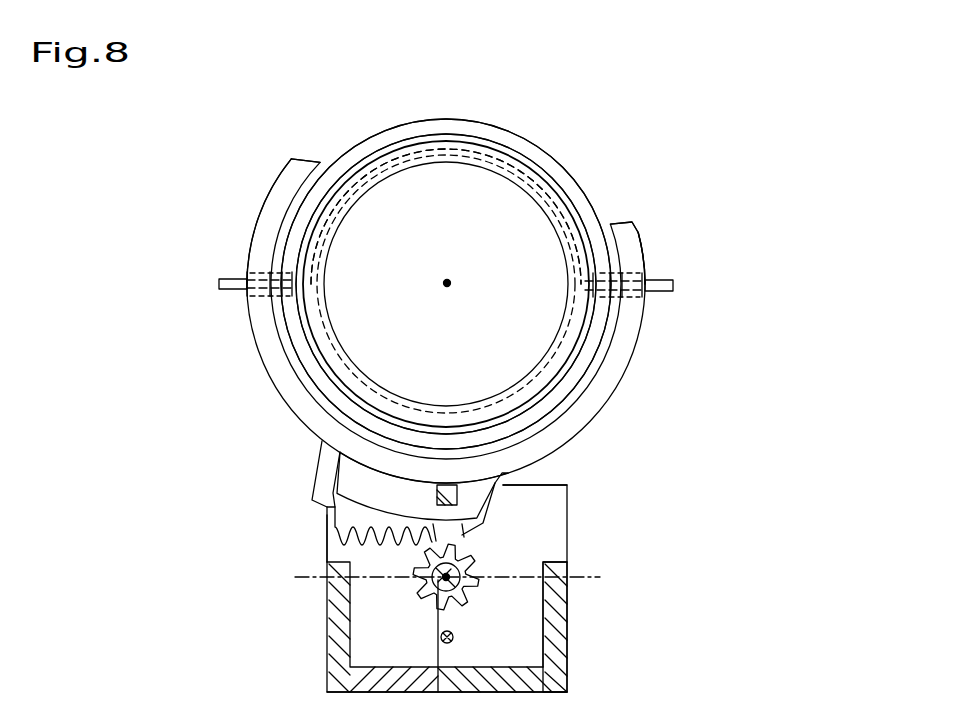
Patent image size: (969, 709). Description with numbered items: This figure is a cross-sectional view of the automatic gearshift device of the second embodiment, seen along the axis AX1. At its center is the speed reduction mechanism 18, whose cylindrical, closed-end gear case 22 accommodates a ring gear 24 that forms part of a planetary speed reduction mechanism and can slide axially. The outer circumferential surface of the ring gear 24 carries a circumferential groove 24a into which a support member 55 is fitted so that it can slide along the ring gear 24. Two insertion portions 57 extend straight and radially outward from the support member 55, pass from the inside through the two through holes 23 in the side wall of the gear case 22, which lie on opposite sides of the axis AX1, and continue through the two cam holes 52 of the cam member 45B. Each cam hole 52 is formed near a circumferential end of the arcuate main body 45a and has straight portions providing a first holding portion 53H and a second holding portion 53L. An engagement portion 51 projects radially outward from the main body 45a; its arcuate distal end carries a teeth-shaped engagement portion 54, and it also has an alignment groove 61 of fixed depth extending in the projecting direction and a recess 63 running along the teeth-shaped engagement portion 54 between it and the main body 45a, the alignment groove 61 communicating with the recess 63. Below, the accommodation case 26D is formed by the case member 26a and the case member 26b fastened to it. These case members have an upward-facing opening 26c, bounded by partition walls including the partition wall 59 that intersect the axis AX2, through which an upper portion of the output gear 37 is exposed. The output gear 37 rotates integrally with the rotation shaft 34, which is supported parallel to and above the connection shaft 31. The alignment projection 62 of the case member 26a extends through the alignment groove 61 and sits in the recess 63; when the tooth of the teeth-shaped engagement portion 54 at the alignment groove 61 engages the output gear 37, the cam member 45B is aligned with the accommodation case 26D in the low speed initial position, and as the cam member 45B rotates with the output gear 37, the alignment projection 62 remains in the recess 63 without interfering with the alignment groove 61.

The speed reduction mechanism 18 is at (323, 142).
The gear case 22 is at (547, 148).
The through holes 23 is at (314, 292).
The ring gear 24 is at (460, 142).
The groove 24a is at (352, 346).
The support member 55 is at (395, 165).
The axis of the output shaft AX1 is at (447, 279).
The main body 45a is at (606, 398).
The cam member 45B is at (717, 227).
The cam holes 52 is at (266, 248).
The first holding portion 53H is at (272, 218).
The second holding portion 53L is at (250, 296).
The insertion portions 57 is at (219, 284).
The recess 63 is at (325, 465).
The engagement portion 51 is at (312, 490).
The alignment projection 62 is at (437, 492).
The teeth-shaped engagement portion 54 is at (327, 538).
The alignment groove 61 is at (465, 538).
The rotation shaft 34 is at (428, 594).
The axis AX2 is at (457, 582).
The connection shaft 31 is at (441, 636).
The output gear 37 is at (453, 640).
The accommodation case 26D is at (652, 527).
The partition wall 59 is at (568, 492).
The opening 26c is at (560, 562).
The case member 26a is at (562, 632).
The case member 26b is at (327, 633).